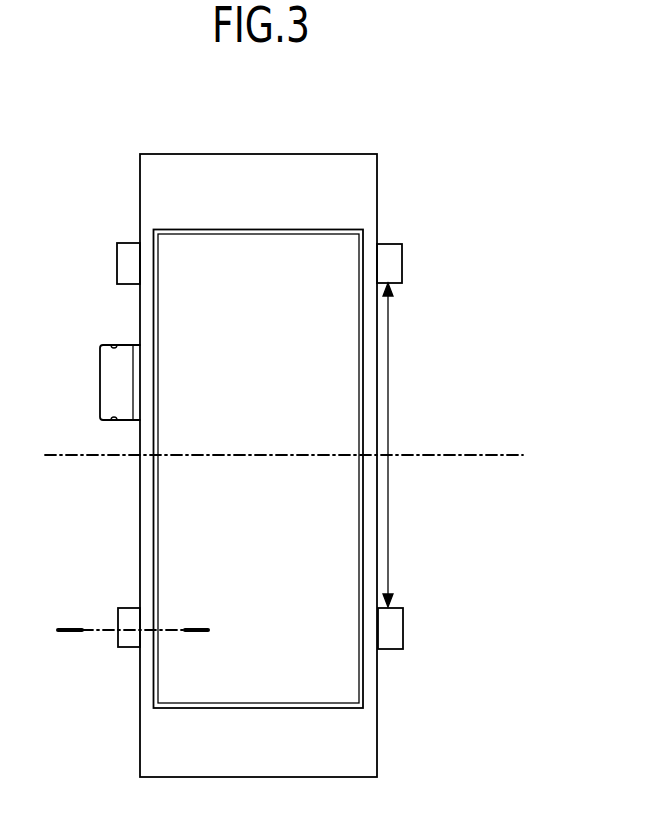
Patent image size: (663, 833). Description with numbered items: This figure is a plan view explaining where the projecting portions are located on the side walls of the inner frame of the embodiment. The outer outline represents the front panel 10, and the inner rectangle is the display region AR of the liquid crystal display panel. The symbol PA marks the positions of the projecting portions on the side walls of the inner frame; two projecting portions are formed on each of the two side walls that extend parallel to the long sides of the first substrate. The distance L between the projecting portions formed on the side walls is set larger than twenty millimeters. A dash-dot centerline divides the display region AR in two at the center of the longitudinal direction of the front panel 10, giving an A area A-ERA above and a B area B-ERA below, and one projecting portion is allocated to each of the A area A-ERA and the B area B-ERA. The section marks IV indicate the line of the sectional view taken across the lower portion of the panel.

The front panel 10 is at (331, 170).
The positions of the projecting portions PA is at (393, 255).
The display region AR is at (187, 538).
The distance between the projecting portions L is at (397, 445).
The A area A-ERA is at (518, 357).
The B area B-ERA is at (515, 615).
The section line IV- IV is at (70, 634).